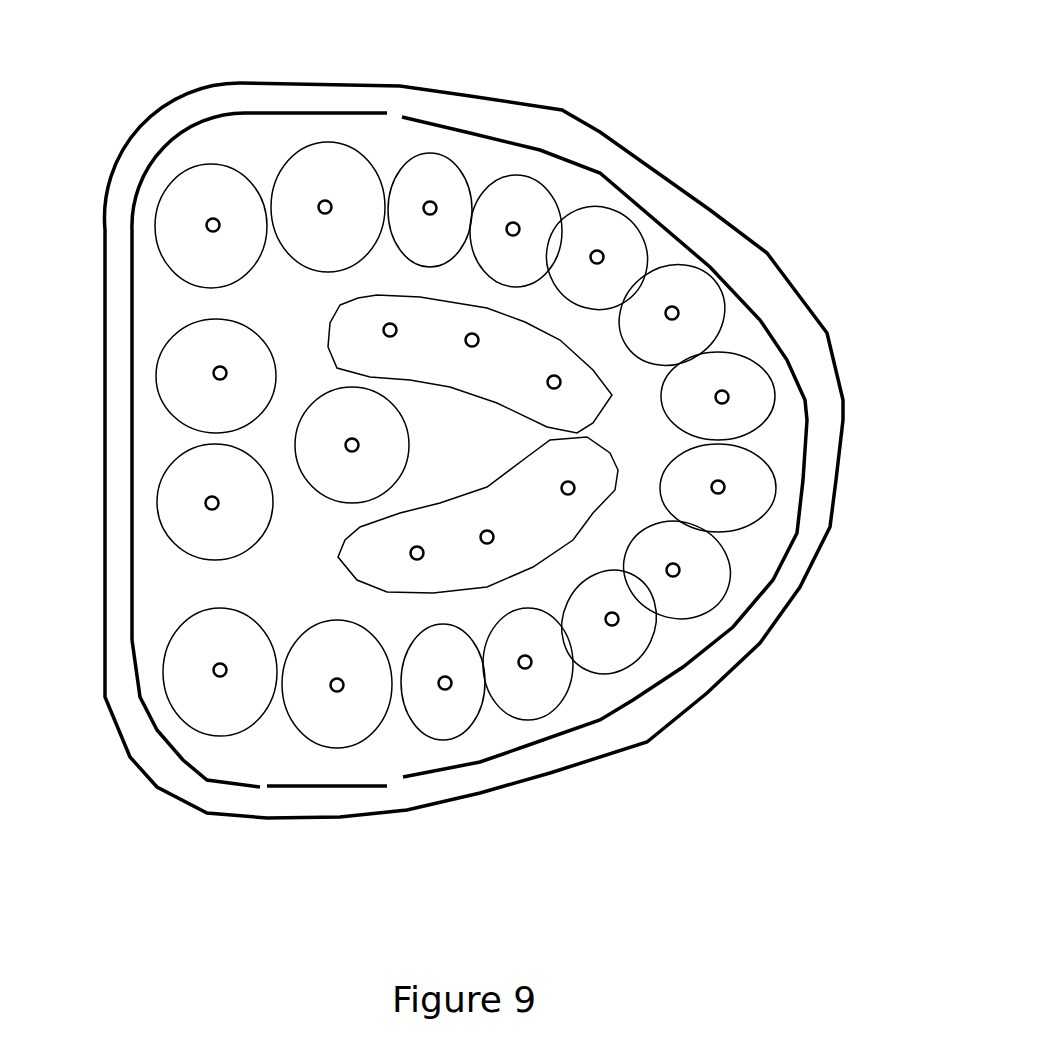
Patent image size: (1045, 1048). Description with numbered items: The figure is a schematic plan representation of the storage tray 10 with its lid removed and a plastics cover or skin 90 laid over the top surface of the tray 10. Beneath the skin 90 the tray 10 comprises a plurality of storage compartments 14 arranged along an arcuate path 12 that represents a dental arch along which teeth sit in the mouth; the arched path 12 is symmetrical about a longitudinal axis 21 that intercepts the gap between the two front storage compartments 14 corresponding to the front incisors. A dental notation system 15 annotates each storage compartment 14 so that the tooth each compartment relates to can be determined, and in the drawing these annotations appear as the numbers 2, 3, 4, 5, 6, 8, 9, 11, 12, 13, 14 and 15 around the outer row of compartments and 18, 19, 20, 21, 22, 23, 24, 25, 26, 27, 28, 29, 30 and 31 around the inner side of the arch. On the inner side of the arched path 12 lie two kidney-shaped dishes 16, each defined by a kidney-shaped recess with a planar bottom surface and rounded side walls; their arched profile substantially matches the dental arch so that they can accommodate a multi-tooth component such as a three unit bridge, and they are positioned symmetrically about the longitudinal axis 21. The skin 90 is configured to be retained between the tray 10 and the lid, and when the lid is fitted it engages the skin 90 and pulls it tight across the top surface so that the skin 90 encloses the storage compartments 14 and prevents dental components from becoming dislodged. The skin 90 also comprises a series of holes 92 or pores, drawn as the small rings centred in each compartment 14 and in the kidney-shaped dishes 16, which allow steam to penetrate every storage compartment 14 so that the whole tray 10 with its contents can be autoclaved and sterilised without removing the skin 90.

The storage tray 10 is at (717, 98).
The skin 90 is at (802, 292).
The holes 92 is at (213, 225).
The kidney-shaped dishes 16 is at (362, 327).
The dental notation system 15 is at (197, 602).
The storage compartments 14 is at (710, 600).
The sensing zone 13 is at (430, 199).
The arcuate path 12 is at (516, 218).
The sensing zone 11 is at (597, 258).
The sensing zone 9 is at (731, 396).
The sensing zone 8 is at (730, 488).
The sensing zone 6 is at (609, 622).
The sensing zone 5 is at (528, 672).
The sensing zone 4 is at (443, 694).
The sensing zone 3 is at (337, 695).
The sensing zone 2 is at (220, 685).
The sensing zone 18 is at (216, 361).
The sensing zone 19 is at (325, 283).
The sensing zone 20 is at (415, 280).
The longitudinal axis 21 is at (492, 295).
The sensing zone 22 is at (558, 322).
The sensing zone 23 is at (616, 362).
The sensing zone 24 is at (647, 410).
The sensing zone 25 is at (643, 477).
The sensing zone 26 is at (627, 516).
The sensing zone 27 is at (572, 557).
The sensing zone 28 is at (508, 592).
The sensing zone 29 is at (437, 607).
The sensing zone 30 is at (345, 604).
The sensing zone 31 is at (233, 596).